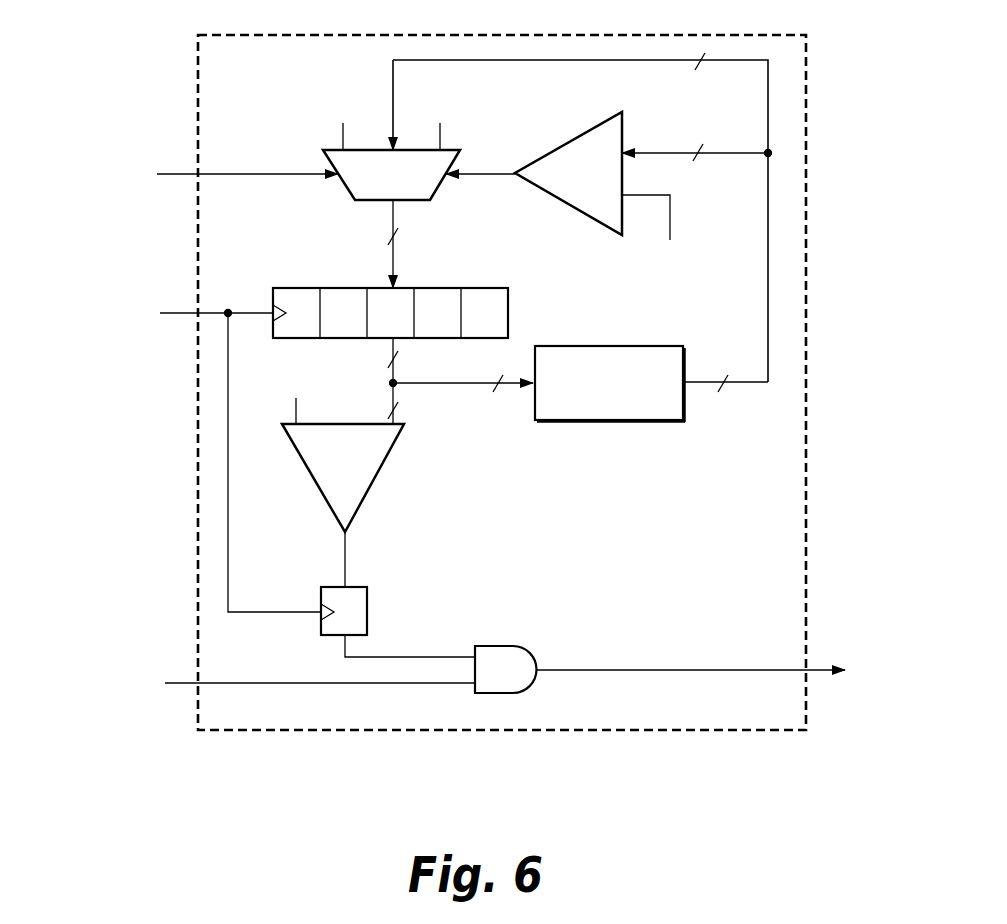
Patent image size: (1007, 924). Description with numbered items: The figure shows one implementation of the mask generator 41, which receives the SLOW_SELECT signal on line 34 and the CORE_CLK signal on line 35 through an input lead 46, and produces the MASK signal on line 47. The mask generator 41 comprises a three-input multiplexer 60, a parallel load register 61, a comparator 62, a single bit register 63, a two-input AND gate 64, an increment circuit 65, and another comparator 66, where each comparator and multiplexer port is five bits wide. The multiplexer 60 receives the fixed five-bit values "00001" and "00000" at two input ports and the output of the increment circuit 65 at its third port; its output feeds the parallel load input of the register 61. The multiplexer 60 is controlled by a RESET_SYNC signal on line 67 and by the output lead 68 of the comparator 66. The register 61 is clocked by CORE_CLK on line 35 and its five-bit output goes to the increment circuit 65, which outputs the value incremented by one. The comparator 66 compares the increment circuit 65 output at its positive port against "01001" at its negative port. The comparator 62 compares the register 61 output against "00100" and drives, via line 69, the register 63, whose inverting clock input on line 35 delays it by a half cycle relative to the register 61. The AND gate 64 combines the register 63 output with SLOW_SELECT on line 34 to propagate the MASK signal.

The line 34 is at (181, 684).
The line 35 is at (180, 312).
The mask generator 41 is at (703, 731).
The input lead 46 is at (218, 312).
The line 47 is at (817, 671).
The three-input multiplexer 60 is at (368, 200).
The parallel load register 61 is at (508, 310).
The comparator 62 is at (384, 466).
The single bit register 63 is at (367, 606).
The two-input AND gate 64 is at (506, 669).
The increment circuit 65 is at (645, 421).
The comparator 66 is at (572, 212).
The line 67 is at (178, 175).
The output lead 68 is at (468, 175).
The line 69 is at (344, 562).